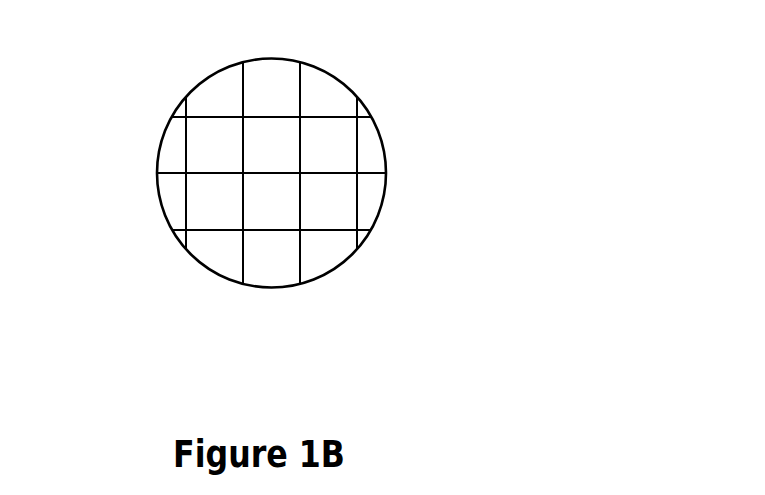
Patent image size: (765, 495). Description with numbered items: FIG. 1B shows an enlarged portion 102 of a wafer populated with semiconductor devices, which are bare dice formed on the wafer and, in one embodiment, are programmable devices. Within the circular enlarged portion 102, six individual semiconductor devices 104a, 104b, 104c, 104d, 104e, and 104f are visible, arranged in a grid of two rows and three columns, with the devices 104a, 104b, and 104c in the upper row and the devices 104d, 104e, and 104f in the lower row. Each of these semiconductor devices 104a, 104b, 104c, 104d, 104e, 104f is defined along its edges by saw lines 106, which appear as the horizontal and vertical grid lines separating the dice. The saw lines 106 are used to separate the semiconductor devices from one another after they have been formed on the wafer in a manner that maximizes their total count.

The enlarged portion 102 is at (196, 84).
The semiconductor device 104a is at (238, 155).
The semiconductor device 104b is at (295, 155).
The semiconductor device 104c is at (353, 155).
The semiconductor device 104d is at (238, 216).
The semiconductor device 104e is at (295, 216).
The semiconductor device 104f is at (350, 216).
The saw lines 106 is at (315, 232).